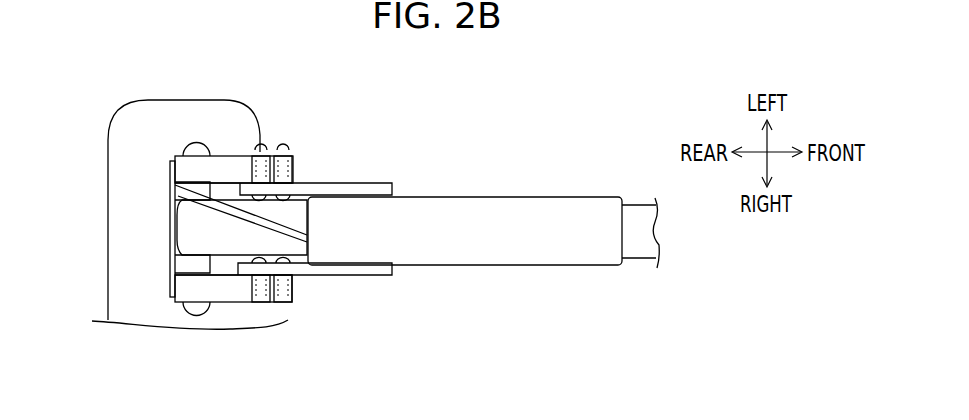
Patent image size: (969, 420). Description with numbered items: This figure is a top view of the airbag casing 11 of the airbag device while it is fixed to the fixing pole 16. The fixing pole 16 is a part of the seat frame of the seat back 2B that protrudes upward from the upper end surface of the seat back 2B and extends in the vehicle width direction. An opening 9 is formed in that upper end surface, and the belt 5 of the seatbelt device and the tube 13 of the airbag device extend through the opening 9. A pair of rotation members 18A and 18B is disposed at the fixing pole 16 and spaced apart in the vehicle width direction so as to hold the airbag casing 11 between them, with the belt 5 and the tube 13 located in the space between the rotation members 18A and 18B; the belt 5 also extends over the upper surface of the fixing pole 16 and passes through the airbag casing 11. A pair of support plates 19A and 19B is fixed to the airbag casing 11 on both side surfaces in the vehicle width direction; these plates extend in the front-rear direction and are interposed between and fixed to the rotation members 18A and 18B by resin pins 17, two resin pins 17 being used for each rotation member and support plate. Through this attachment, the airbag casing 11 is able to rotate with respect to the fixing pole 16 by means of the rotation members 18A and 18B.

The seat back 2B is at (118, 150).
The tube 13 is at (172, 185).
The belt 5 is at (173, 222).
The opening 9 is at (177, 270).
The fixing pole 16 is at (180, 262).
The rotation member 18B is at (197, 150).
The rotation member 18A is at (200, 292).
The support plate 19B is at (365, 183).
The support plate 19A is at (348, 278).
The resin pins 17 is at (262, 150).
The airbag casing 11 is at (493, 212).